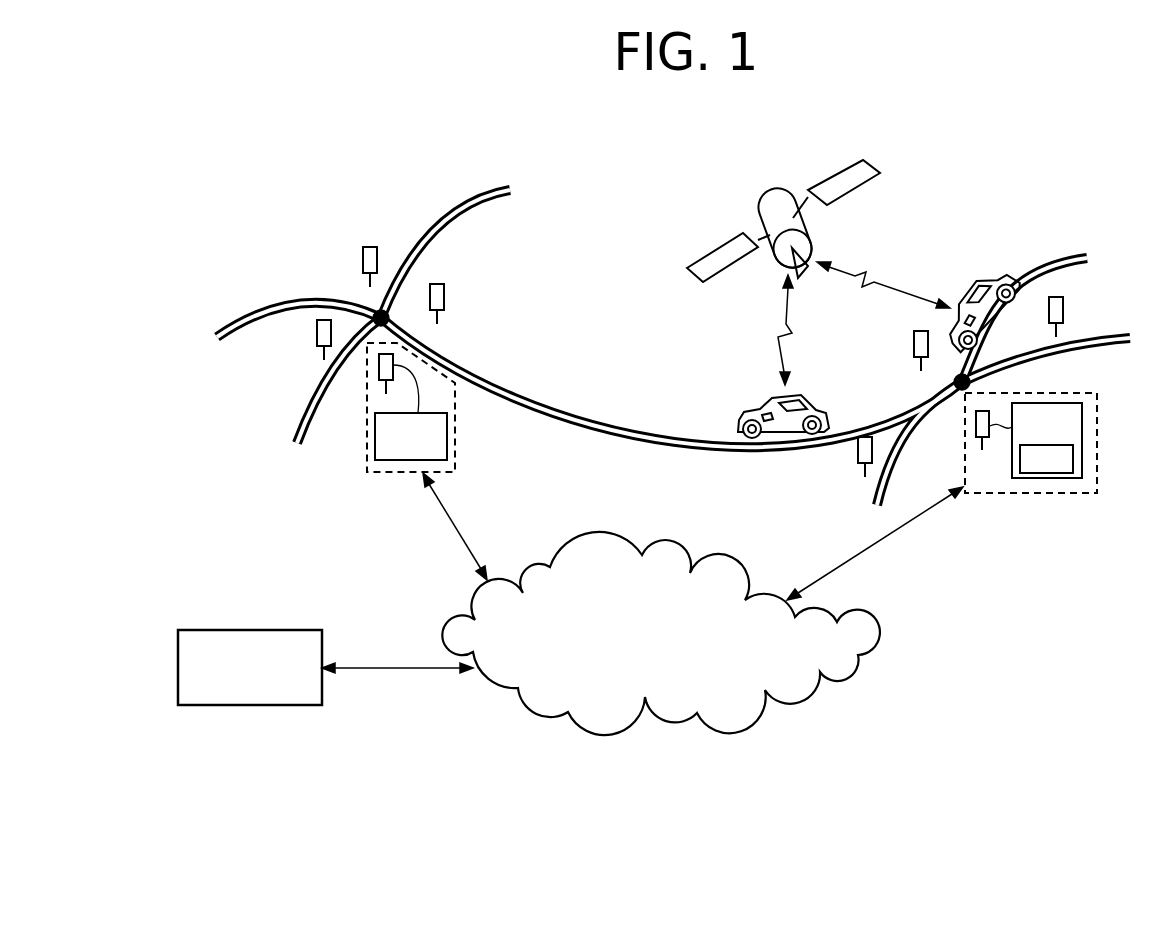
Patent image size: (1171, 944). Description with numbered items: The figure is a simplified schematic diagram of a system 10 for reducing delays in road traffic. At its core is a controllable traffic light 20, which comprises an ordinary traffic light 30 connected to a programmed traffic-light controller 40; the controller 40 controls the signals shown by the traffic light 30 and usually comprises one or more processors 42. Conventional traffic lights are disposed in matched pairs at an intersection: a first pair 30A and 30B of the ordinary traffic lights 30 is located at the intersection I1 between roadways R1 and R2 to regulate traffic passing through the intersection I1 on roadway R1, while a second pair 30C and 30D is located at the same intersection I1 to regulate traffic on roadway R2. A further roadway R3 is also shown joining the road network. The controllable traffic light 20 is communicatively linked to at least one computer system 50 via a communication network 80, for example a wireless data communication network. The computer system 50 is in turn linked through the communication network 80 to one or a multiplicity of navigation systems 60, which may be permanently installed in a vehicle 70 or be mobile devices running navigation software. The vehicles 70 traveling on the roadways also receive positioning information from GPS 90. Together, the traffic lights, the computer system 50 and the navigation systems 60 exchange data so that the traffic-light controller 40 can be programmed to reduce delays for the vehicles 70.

The system for reducing delays in road traffic 10 is at (673, 458).
The controllable traffic light 20 is at (768, 446).
The ordinary traffic light 30 is at (858, 452).
The ordinary traffic light of the first pair 30A is at (444, 297).
The ordinary traffic light of the first pair 30B is at (317, 333).
The ordinary traffic light of the second pair 30C is at (379, 259).
The ordinary traffic light of the second pair 30D is at (378, 372).
The programmed traffic-light controller 40 is at (772, 476).
The processor 42 is at (1047, 474).
The computer system 50 is at (290, 706).
The navigation system 60 is at (737, 424).
The vehicle 70 is at (862, 336).
The communication network 80 is at (741, 560).
The GPS 90 is at (762, 210).
The intersection I1 is at (378, 314).
The roadway R1 is at (243, 337).
The roadway R2 is at (505, 191).
The roadway R3 is at (878, 500).